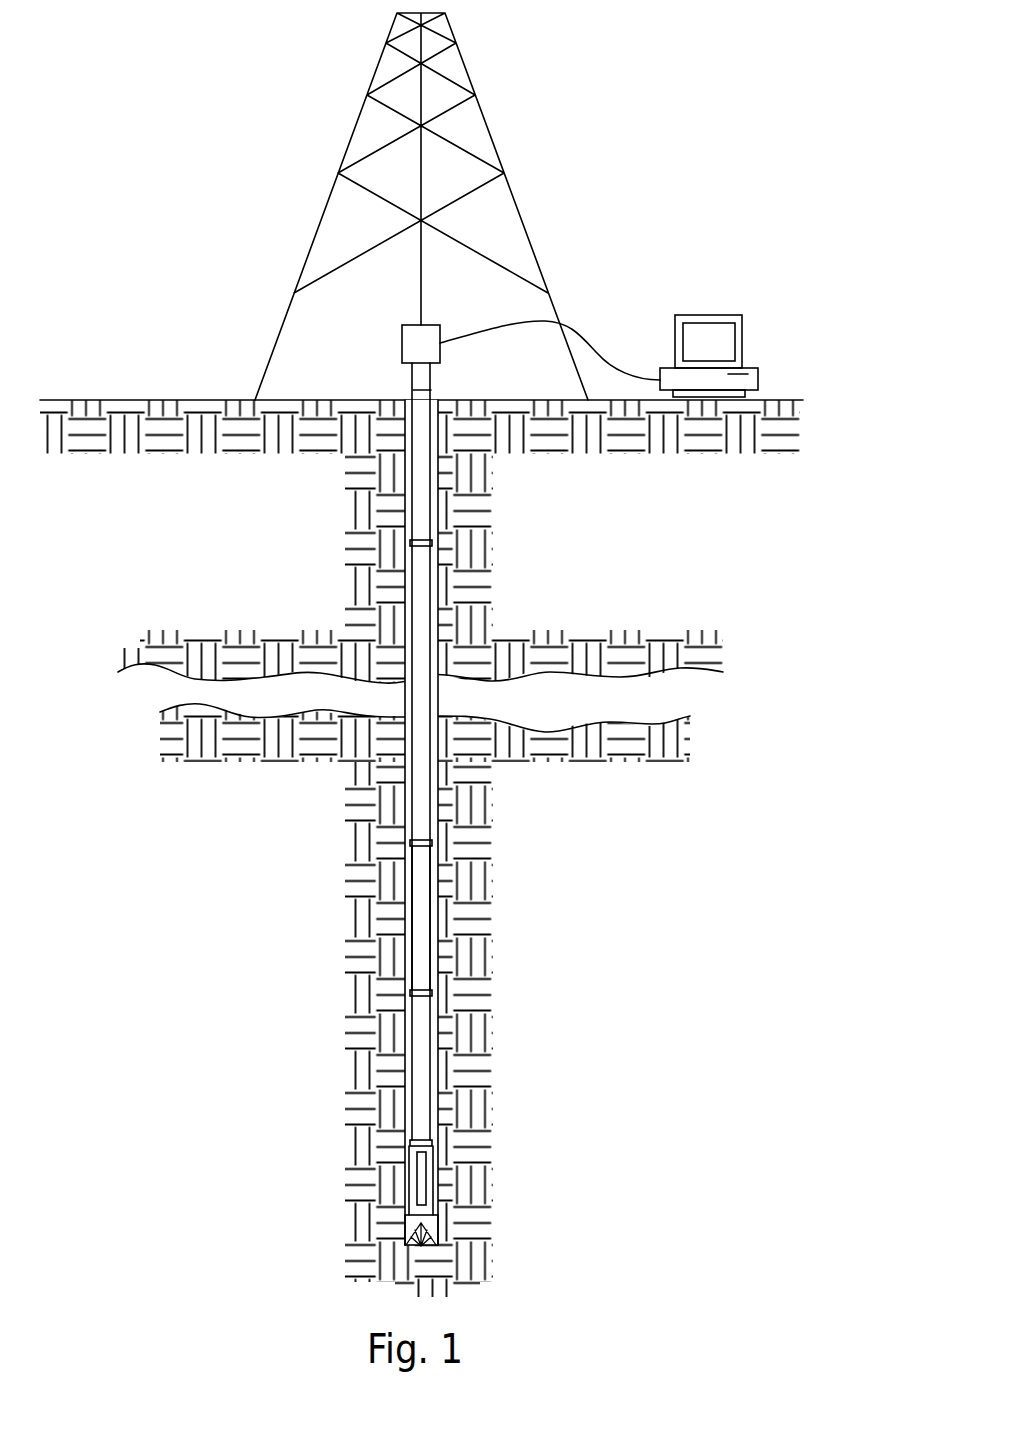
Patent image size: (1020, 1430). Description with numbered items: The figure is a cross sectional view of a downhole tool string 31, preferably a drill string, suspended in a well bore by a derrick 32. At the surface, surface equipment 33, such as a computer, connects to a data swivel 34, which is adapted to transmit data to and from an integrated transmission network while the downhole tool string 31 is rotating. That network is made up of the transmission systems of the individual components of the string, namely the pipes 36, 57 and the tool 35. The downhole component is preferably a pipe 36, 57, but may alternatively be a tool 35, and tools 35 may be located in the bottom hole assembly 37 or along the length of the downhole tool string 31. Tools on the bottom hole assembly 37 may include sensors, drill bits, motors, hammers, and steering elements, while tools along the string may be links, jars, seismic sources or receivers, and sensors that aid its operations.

The downhole tool string 31 is at (445, 388).
The derrick 32 is at (515, 203).
The surface equipment 33 is at (712, 338).
The data swivel 34 is at (420, 343).
The tool 35 is at (409, 1152).
The pipe 36 is at (422, 805).
The bottom hole assembly 37 is at (410, 1223).
The pipe 57 is at (422, 932).